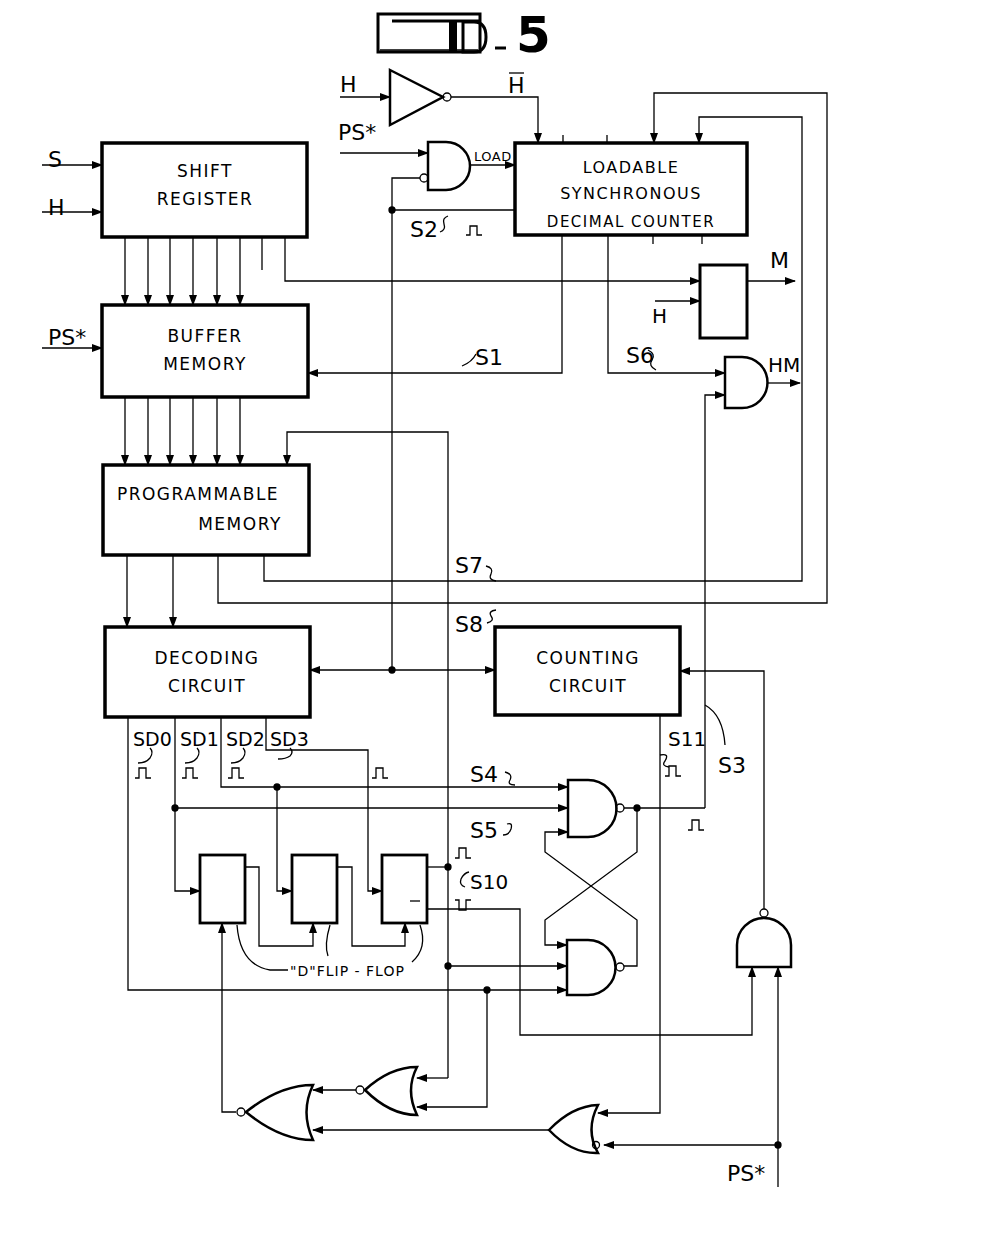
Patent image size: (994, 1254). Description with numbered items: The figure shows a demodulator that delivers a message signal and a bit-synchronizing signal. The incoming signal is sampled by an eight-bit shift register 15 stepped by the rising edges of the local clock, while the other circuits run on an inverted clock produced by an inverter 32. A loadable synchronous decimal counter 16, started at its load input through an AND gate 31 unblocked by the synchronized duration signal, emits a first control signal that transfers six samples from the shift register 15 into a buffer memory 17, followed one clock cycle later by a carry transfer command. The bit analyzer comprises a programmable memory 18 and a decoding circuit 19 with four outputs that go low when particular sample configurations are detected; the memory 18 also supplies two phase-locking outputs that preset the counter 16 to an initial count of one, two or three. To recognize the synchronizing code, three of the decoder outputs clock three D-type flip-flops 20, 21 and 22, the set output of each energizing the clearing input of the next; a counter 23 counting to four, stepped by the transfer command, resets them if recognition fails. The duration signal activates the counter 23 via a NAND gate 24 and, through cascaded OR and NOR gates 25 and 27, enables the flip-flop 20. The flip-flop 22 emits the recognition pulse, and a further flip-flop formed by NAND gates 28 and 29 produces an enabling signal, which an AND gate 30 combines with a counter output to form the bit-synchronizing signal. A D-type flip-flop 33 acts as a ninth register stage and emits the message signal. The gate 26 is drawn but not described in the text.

The shift register 15 is at (307, 212).
The loadable synchronous decimal counter 16 is at (537, 237).
The buffer memory 17 is at (308, 350).
The programmable memory 18 is at (309, 518).
The decoding circuit 19 is at (310, 648).
The D-type flip-flop 20 is at (212, 855).
The D-type flip-flop 21 is at (304, 855).
The D-type flip-flop 22 is at (394, 855).
The counter 23 is at (535, 717).
The NAND gate 24 is at (782, 922).
The OR gate 25 is at (580, 1087).
The NOR gate 26 is at (397, 1049).
The NOR gate 27 is at (288, 1067).
The NAND gate 28 is at (595, 764).
The NAND gate 29 is at (585, 995).
The AND gate 30 is at (745, 408).
The AND gate 31 is at (440, 142).
The inverter 32 is at (418, 84).
The D-type flip-flop 33 is at (762, 317).